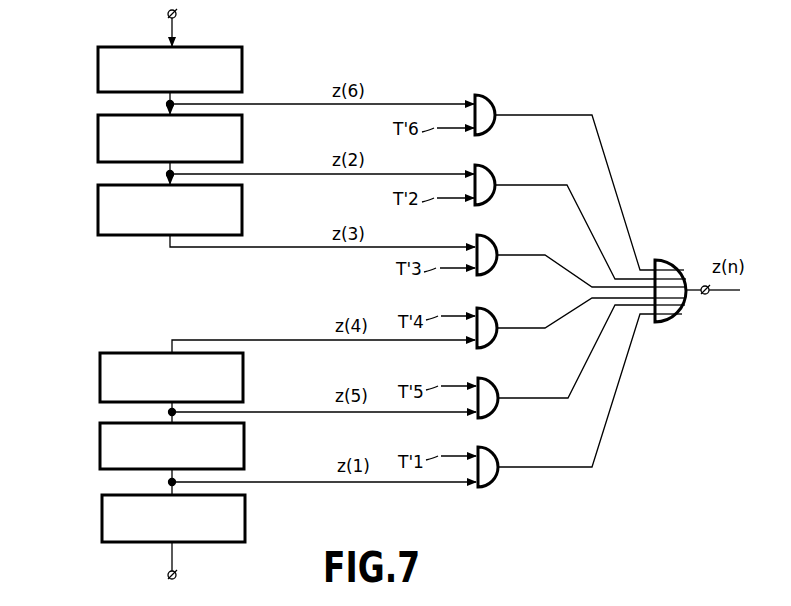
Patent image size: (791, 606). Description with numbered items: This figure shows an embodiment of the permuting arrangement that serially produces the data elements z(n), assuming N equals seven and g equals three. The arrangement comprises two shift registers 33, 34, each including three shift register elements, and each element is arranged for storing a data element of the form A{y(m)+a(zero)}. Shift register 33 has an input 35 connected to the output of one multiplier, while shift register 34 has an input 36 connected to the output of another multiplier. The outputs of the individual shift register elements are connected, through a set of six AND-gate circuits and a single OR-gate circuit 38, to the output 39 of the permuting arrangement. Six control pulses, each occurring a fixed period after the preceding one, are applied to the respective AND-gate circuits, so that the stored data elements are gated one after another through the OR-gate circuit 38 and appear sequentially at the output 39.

The shift register 33 is at (73, 427).
The shift register 34 is at (66, 122).
The input 35 is at (176, 575).
The input 36 is at (176, 14).
The OR-gate circuit 38 is at (668, 324).
The output 39 is at (707, 295).